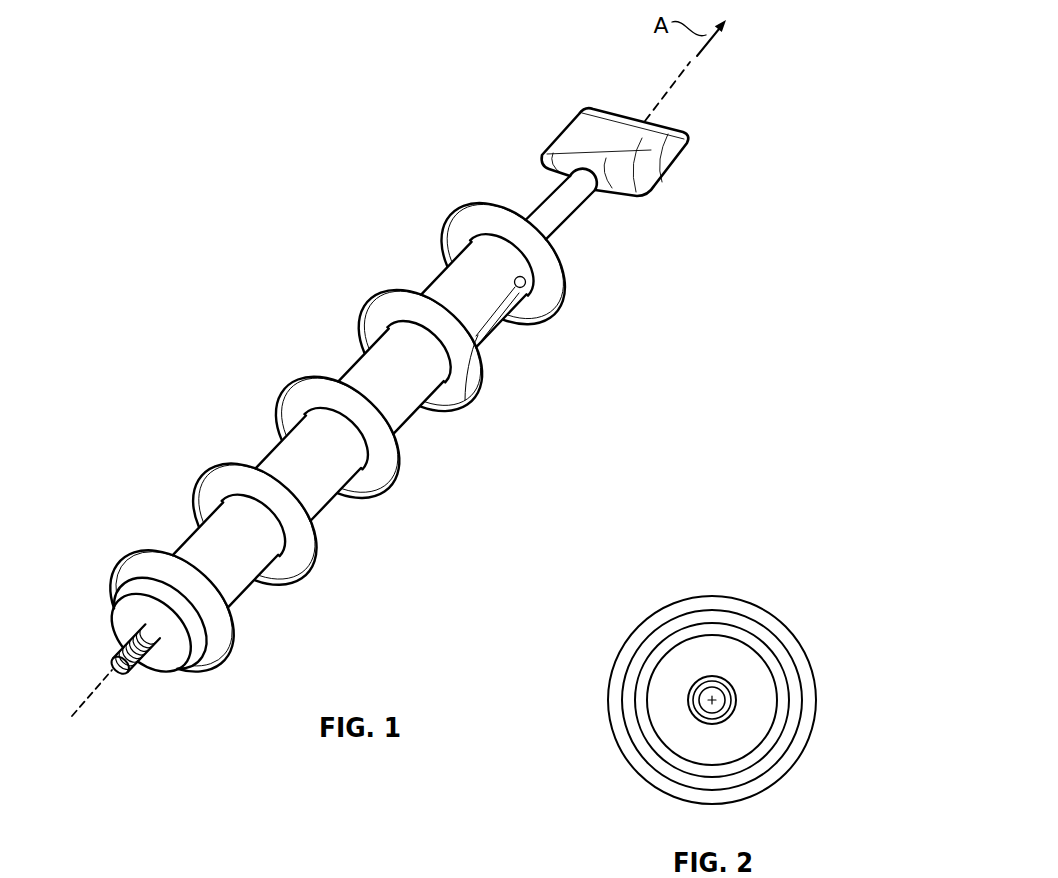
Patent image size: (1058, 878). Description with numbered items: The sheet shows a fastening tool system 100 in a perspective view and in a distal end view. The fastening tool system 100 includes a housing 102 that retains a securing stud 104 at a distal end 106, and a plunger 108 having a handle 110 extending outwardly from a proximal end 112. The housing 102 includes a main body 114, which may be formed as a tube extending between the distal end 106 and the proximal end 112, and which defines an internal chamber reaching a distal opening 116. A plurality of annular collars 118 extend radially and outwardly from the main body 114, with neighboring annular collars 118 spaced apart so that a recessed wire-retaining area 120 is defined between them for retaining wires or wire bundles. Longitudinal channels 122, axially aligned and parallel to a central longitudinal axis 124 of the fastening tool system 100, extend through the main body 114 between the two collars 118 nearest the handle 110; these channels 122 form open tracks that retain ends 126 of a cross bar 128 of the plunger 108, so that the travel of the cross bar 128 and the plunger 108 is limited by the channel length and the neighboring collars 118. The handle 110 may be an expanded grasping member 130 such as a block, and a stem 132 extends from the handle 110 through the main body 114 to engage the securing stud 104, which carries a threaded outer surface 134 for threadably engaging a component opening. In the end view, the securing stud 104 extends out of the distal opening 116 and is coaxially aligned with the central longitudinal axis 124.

In FIG. 1, the fastening tool system 100 is at (230, 108).
In FIG. 2, the fastening tool system 100 is at (660, 562).
In FIG. 1, the housing 102 is at (515, 366).
In FIG. 2, the housing 102 is at (835, 730).
In FIG. 1, the securing stud 104 is at (101, 648).
In FIG. 2, the securing stud 104 is at (680, 732).
In FIG. 1, the distal end 106 is at (200, 670).
In FIG. 2, the distal end 106 is at (762, 695).
In FIG. 1, the plunger 108 is at (585, 232).
In FIG. 1, the handle 110 is at (690, 142).
In FIG. 1, the proximal end 112 is at (567, 278).
In FIG. 1, the main body 114 is at (355, 370).
In FIG. 2, the main body 114 is at (663, 683).
In FIG. 1, the distal opening 116 is at (160, 648).
In FIG. 2, the distal opening 116 is at (727, 673).
In FIG. 1, the annular collars 118 is at (460, 210).
In FIG. 2, the annular collars 118 is at (790, 627).
In FIG. 1, the recessed wire-retaining area 120 is at (428, 276).
In FIG. 1, the longitudinal channels 122 is at (503, 323).
In FIG. 1, the central longitudinal axis 124 is at (672, 78).
In FIG. 2, the central longitudinal axis 124 is at (700, 693).
In FIG. 1, the ends 126 is at (500, 216).
In FIG. 1, the cross bar 128 is at (465, 400).
In FIG. 1, the expanded grasping member 130 is at (594, 121).
In FIG. 1, the stem 132 is at (575, 203).
In FIG. 1, the threaded outer surface 134 is at (140, 668).